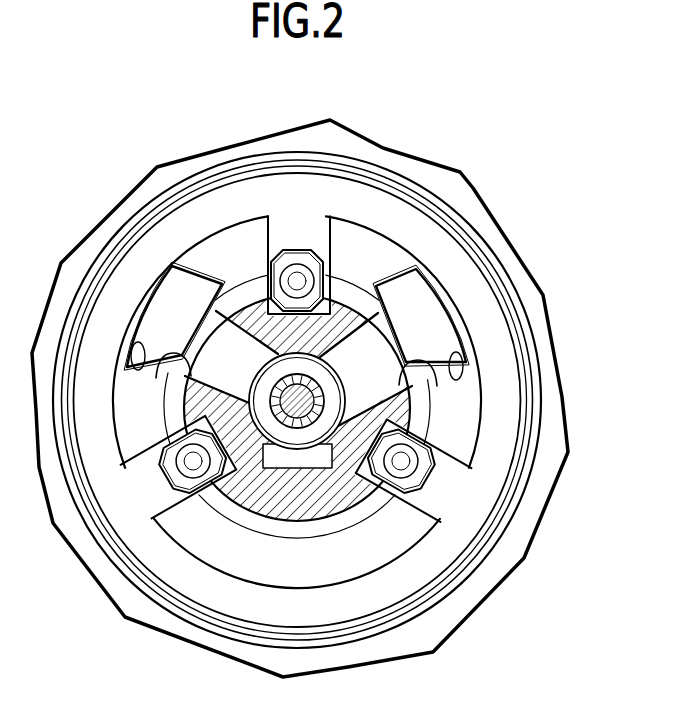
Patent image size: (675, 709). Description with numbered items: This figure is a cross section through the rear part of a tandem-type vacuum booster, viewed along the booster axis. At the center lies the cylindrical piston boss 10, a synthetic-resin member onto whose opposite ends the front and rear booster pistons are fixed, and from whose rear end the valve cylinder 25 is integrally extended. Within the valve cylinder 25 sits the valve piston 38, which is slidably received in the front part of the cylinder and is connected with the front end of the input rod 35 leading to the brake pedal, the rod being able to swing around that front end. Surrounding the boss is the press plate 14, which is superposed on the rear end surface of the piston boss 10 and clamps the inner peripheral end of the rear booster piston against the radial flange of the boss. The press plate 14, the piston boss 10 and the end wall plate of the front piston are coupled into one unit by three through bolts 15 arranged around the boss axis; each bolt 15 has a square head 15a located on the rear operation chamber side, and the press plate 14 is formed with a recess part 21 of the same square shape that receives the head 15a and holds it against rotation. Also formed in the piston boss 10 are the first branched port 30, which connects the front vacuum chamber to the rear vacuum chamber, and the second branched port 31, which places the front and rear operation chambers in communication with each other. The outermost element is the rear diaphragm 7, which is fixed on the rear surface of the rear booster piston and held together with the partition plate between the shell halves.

The rear diaphragm 7 is at (478, 210).
The piston boss 10 is at (233, 248).
The press plate 14 is at (467, 272).
The through bolt 15 is at (302, 272).
The square head 15a is at (284, 255).
The recess part 21 is at (336, 267).
The valve cylinder 25 is at (257, 500).
The first branched port 30 is at (308, 468).
The second branched port 31 is at (141, 368).
The input rod 35 is at (314, 387).
The valve piston 38 is at (270, 378).